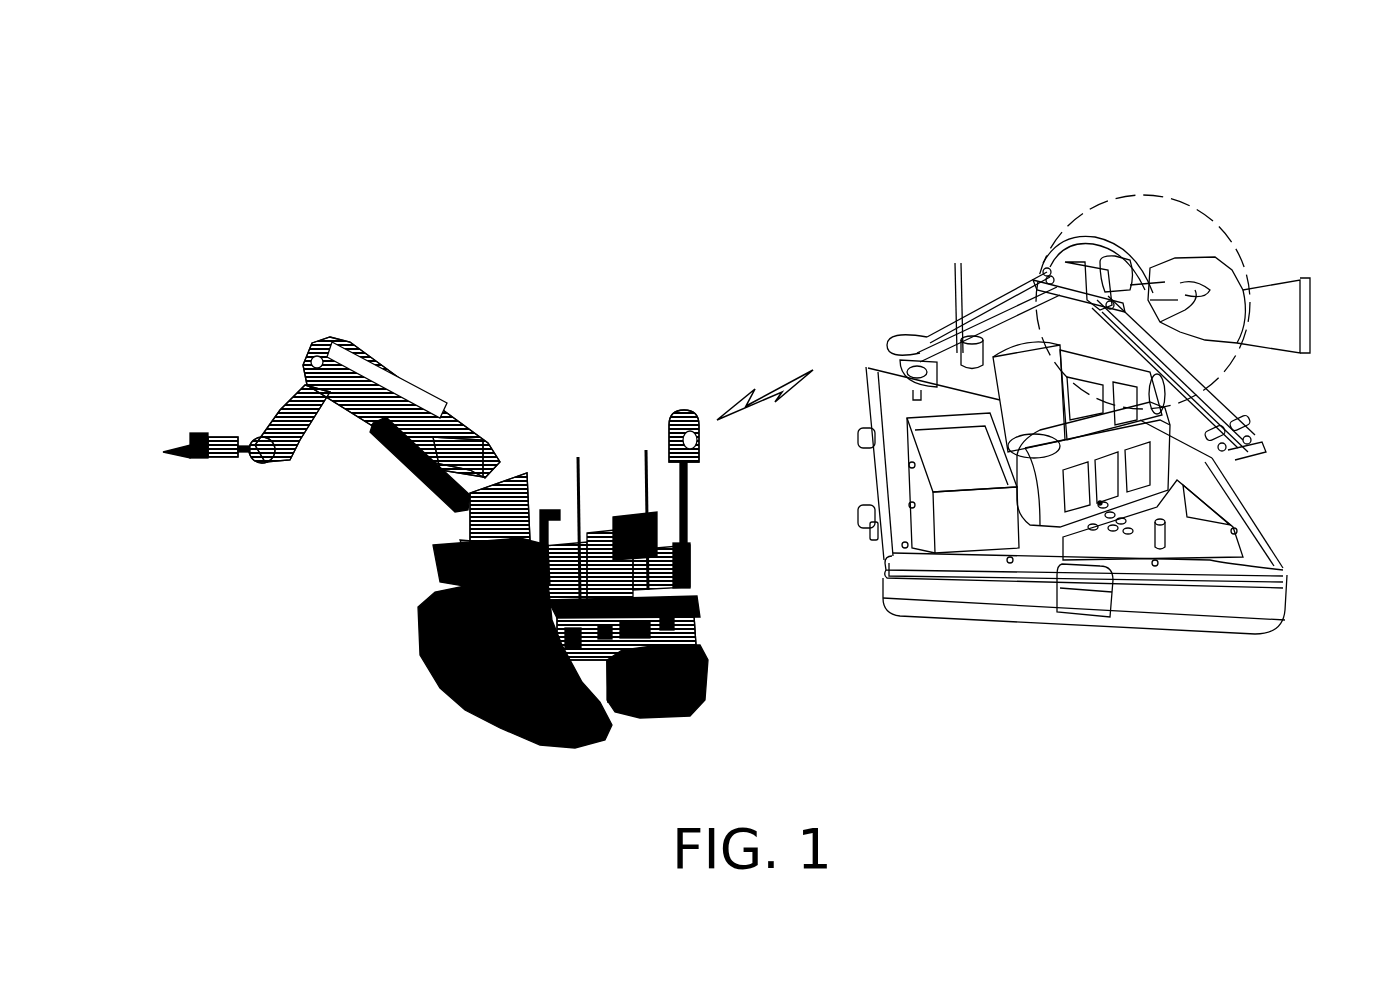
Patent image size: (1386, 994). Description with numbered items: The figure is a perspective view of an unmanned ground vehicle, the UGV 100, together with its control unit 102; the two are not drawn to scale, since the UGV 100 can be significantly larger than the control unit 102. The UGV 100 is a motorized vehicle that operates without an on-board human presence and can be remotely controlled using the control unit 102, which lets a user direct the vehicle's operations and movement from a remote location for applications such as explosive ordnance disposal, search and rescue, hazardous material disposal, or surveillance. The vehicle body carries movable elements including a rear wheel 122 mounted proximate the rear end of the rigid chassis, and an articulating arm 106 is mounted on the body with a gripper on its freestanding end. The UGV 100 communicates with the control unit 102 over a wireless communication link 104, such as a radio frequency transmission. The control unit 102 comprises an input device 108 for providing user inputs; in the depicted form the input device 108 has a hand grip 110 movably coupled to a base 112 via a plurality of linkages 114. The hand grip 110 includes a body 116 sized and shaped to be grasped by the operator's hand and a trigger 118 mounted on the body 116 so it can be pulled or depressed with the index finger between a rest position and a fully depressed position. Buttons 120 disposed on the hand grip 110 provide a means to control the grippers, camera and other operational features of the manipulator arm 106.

The UGV 100 is at (630, 285).
The control unit 102 is at (1118, 157).
The wireless communication link 104 is at (772, 388).
The articulating arm 106 is at (463, 378).
The input device 108 is at (1120, 233).
The hand grip 110 is at (1190, 260).
The base 112 is at (925, 617).
The linkages 114 is at (990, 282).
The body 116 is at (1178, 313).
The trigger 118 is at (1228, 344).
The buttons 120 is at (1222, 252).
The rear wheel 122 is at (525, 735).